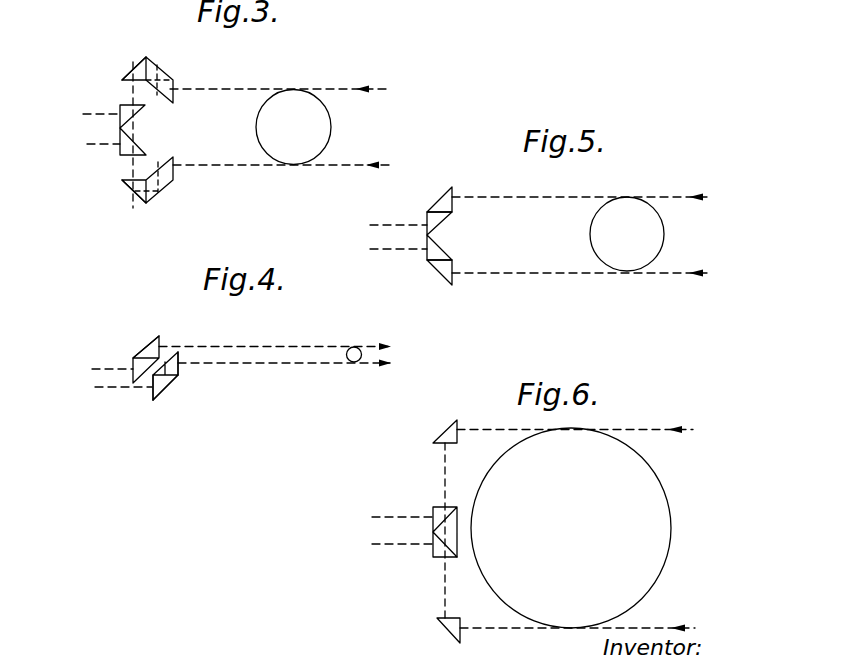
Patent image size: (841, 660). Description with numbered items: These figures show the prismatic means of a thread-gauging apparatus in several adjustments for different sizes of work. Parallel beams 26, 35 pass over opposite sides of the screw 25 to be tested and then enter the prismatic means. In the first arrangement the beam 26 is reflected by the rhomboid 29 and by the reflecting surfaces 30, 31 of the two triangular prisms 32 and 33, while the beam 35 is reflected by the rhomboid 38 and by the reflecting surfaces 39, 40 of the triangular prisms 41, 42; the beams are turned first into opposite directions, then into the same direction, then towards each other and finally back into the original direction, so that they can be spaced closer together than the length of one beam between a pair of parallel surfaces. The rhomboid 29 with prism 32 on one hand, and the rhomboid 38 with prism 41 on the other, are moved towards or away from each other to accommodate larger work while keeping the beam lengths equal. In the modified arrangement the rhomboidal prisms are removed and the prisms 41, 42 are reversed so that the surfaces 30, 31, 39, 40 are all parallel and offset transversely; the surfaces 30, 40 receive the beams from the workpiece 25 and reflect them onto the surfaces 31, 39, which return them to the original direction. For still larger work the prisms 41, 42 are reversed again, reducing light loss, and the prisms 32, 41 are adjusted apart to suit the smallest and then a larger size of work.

In FIG. 3, the screw 25 is at (298, 95).
In FIG. 4, the screw 25 is at (354, 346).
In FIG. 5, the screw 25 is at (590, 228).
In FIG. 6, the screw 25 is at (659, 484).
In FIG. 4, the beam 26 is at (282, 338).
In FIG. 3, the rhomboid 29 is at (172, 80).
In FIG. 4, the reflecting surface 30 is at (159, 337).
In FIG. 4, the reflecting surface 31 is at (133, 365).
In FIG. 3, the triangular prism 32 is at (130, 75).
In FIG. 5, the triangular prism 32 is at (446, 188).
In FIG. 6, the triangular prism 32 is at (437, 435).
In FIG. 3, the triangular prism 33 is at (120, 127).
In FIG. 5, the triangular prism 33 is at (427, 217).
In FIG. 6, the triangular prism 33 is at (442, 507).
In FIG. 4, the beam 35 is at (297, 365).
In FIG. 3, the rhomboid 38 is at (172, 180).
In FIG. 4, the reflecting surface 39 is at (171, 380).
In FIG. 4, the reflecting surface 40 is at (162, 376).
In FIG. 3, the triangular prism 41 is at (130, 193).
In FIG. 4, the triangular prism 41 is at (153, 398).
In FIG. 5, the triangular prism 41 is at (447, 284).
In FIG. 6, the triangular prism 41 is at (437, 622).
In FIG. 3, the triangular prism 42 is at (120, 150).
In FIG. 4, the triangular prism 42 is at (177, 353).
In FIG. 5, the triangular prism 42 is at (425, 253).
In FIG. 6, the triangular prism 42 is at (438, 552).